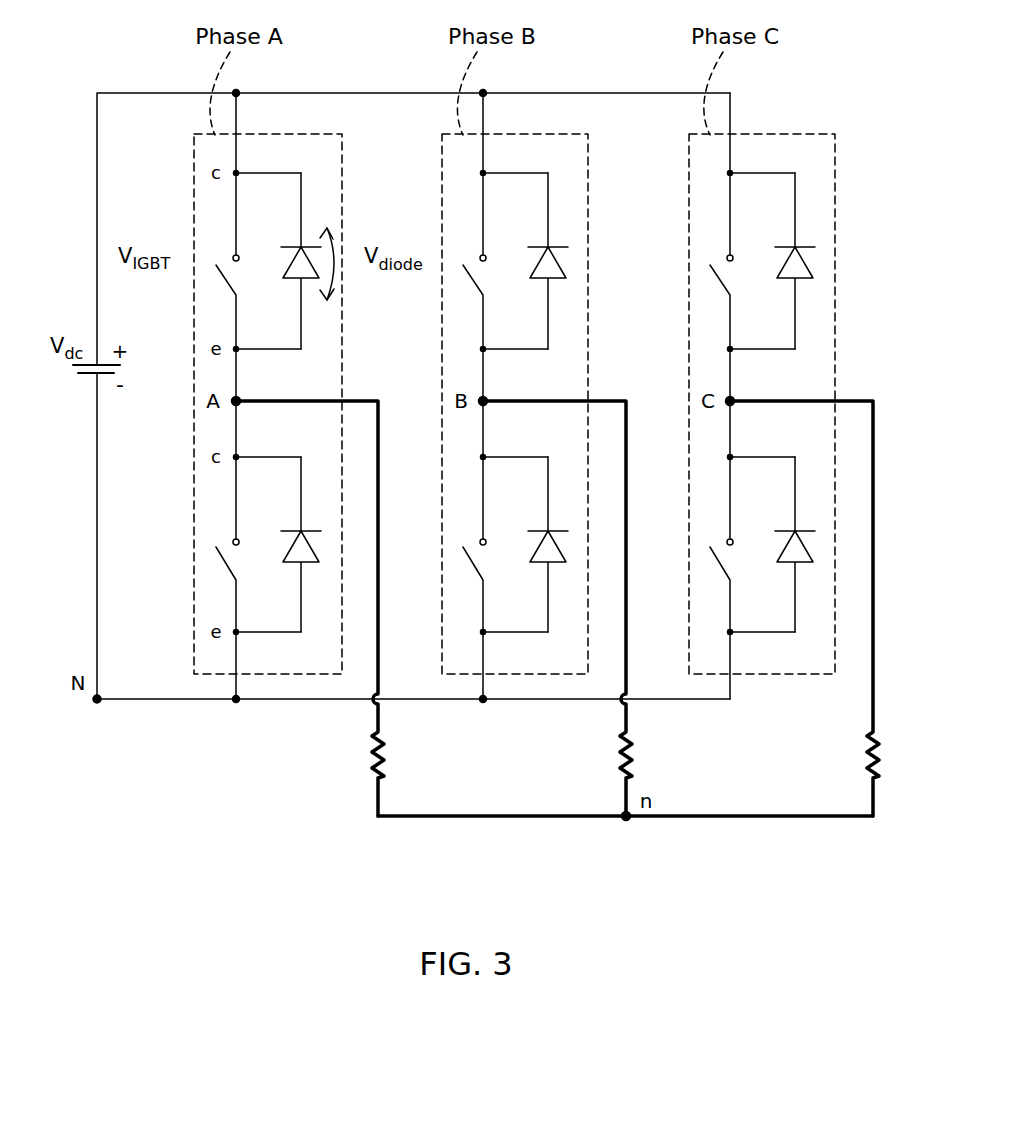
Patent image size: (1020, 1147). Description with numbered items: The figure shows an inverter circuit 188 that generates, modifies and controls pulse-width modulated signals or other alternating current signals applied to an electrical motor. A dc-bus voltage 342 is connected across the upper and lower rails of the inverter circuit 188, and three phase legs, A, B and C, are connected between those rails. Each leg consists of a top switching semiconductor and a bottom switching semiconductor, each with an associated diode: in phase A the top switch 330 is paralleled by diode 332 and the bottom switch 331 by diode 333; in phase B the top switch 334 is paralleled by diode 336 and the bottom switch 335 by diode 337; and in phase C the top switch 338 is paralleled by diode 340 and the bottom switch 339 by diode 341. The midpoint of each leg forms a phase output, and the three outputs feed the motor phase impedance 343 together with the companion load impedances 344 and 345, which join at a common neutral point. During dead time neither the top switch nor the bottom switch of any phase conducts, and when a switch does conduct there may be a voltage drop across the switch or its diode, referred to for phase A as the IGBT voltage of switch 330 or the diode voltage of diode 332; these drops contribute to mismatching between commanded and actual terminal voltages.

The inverter circuit 188 is at (163, 773).
The switching semiconductor 330 is at (224, 282).
The switching semiconductor 331 is at (225, 566).
The diode 332 is at (309, 282).
The diode 333 is at (313, 567).
The switching semiconductor 334 is at (471, 282).
The switching semiconductor 335 is at (472, 566).
The diode 336 is at (556, 282).
The diode 337 is at (560, 567).
The switching semiconductor 338 is at (719, 282).
The switching semiconductor 339 is at (720, 566).
The diode 340 is at (803, 282).
The diode 341 is at (808, 567).
The dc-bus voltage 342 is at (88, 377).
The motor phase impedance 343 is at (617, 767).
The phase C load resistance 344 is at (868, 766).
The phase A load resistance 345 is at (373, 767).